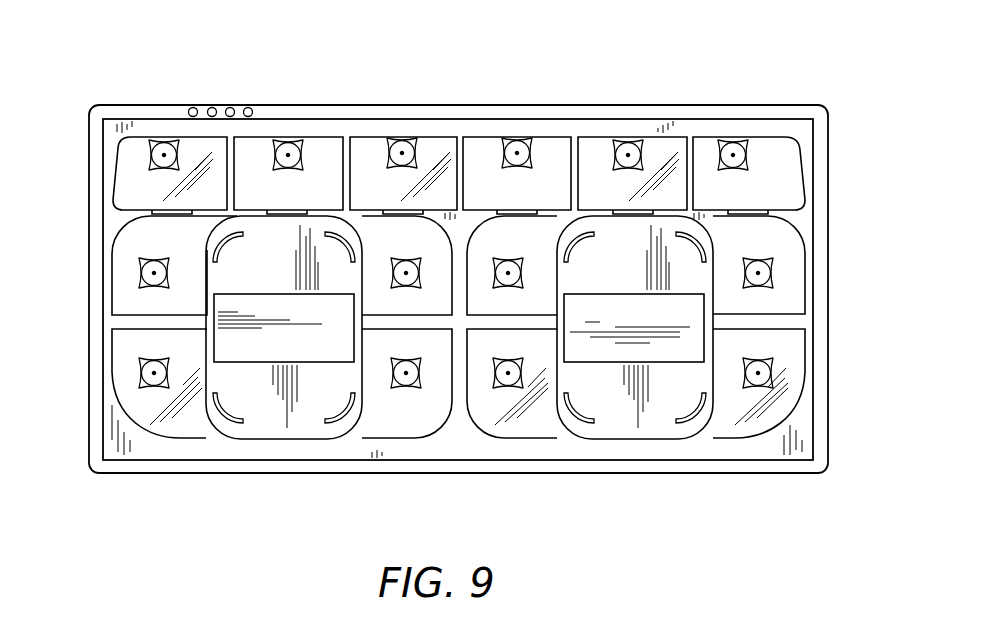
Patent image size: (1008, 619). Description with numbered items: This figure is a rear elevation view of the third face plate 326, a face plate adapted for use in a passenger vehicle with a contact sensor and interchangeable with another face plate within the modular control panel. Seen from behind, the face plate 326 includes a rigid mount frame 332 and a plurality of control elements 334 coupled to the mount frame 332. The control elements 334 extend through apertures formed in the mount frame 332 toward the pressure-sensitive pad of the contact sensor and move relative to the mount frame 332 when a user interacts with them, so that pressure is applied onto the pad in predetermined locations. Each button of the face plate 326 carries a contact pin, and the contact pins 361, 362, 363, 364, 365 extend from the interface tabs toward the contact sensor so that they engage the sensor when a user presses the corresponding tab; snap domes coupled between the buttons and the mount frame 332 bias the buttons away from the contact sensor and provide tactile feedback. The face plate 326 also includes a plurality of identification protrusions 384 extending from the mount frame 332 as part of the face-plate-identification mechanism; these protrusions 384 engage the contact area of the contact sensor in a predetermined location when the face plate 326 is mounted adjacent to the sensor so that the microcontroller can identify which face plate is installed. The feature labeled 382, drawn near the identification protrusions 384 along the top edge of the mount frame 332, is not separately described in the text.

The third face plate 326 is at (115, 89).
The mount frame 332 is at (824, 119).
The control elements 334 is at (664, 132).
The contact pin 361 is at (779, 274).
The contact pin 362 is at (132, 275).
The contact pin 363 is at (413, 289).
The contact pin 364 is at (414, 148).
The contact pin 365 is at (530, 148).
The indicator lights 382 is at (192, 99).
The identification protrusions 384 is at (259, 111).